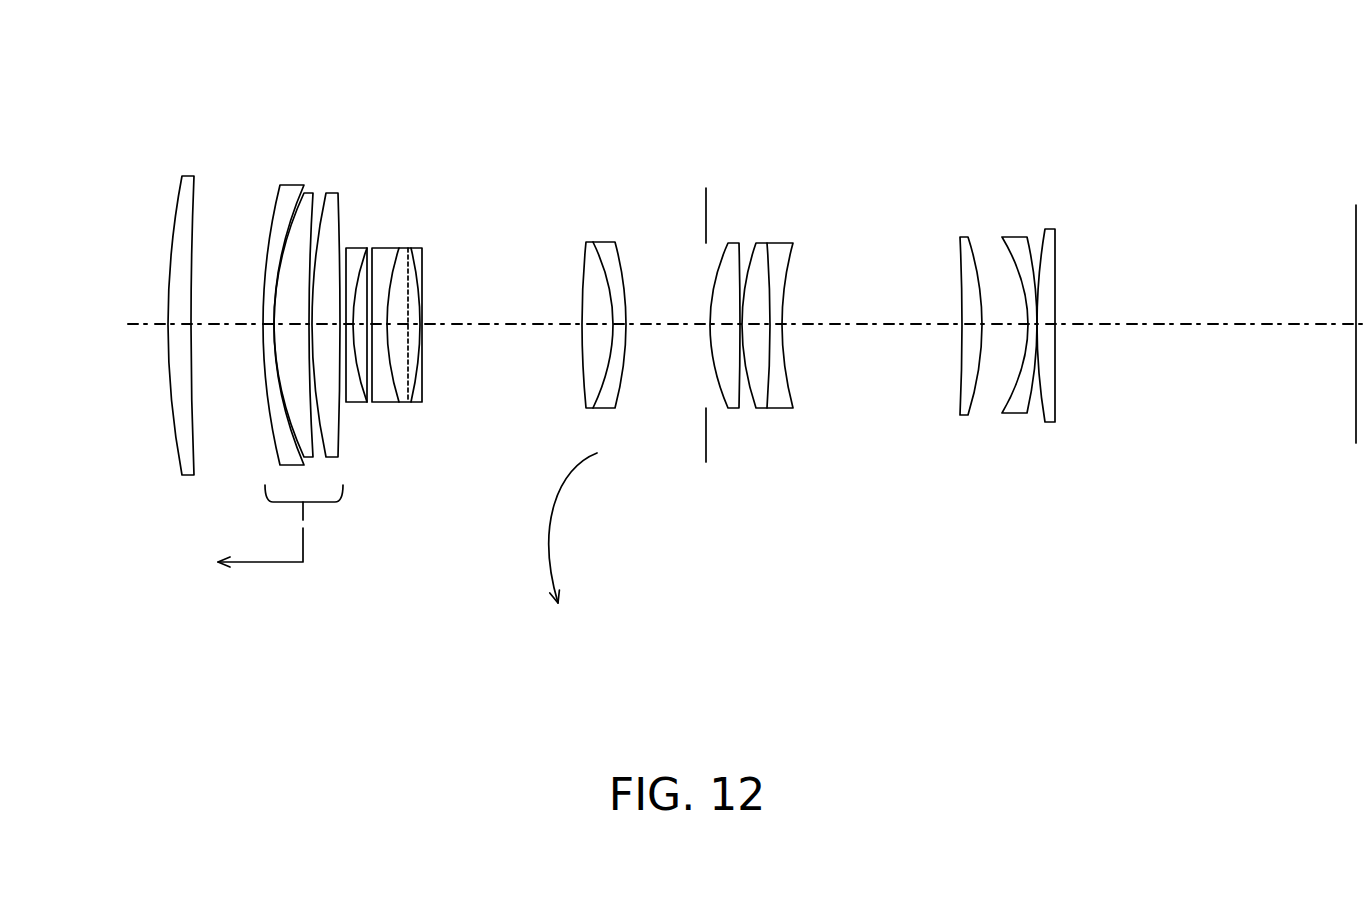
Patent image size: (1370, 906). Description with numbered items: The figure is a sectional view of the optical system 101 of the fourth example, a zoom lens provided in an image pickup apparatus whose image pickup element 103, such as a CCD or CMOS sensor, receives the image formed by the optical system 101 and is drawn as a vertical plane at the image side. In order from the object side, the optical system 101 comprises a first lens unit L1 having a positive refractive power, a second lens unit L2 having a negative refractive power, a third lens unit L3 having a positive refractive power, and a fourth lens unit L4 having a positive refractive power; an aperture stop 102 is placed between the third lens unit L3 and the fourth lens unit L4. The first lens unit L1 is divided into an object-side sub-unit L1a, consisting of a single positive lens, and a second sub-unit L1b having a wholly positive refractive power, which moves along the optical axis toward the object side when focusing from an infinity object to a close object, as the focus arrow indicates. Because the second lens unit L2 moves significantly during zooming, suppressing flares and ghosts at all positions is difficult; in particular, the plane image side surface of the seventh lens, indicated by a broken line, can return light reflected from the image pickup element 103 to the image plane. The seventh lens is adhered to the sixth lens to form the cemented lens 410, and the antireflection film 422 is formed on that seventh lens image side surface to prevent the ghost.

The optical system 101 is at (157, 613).
The aperture stop 102 is at (705, 160).
The image pickup element 103 is at (1353, 212).
The cemented lens 410 is at (485, 587).
The antireflection film 422 is at (412, 373).
The first lens unit L1 is at (145, 70).
The 1a-th lens unit L1a is at (157, 153).
The 1b-th lens unit L1b is at (263, 153).
The second lens unit L2 is at (346, 218).
The third lens unit L3 is at (558, 220).
The fourth lens unit L4 is at (718, 219).